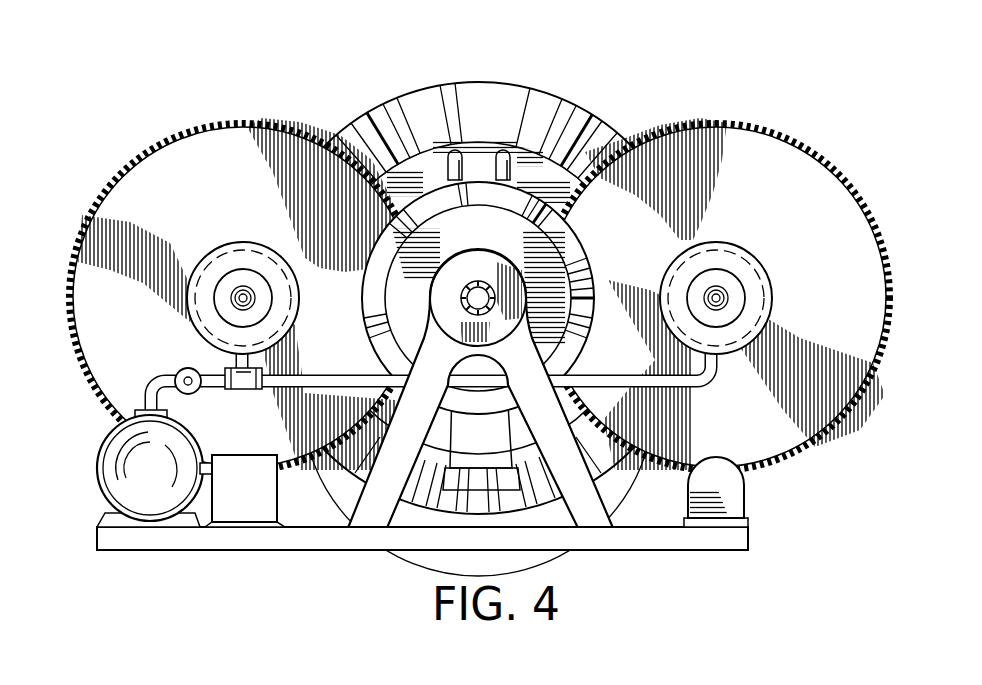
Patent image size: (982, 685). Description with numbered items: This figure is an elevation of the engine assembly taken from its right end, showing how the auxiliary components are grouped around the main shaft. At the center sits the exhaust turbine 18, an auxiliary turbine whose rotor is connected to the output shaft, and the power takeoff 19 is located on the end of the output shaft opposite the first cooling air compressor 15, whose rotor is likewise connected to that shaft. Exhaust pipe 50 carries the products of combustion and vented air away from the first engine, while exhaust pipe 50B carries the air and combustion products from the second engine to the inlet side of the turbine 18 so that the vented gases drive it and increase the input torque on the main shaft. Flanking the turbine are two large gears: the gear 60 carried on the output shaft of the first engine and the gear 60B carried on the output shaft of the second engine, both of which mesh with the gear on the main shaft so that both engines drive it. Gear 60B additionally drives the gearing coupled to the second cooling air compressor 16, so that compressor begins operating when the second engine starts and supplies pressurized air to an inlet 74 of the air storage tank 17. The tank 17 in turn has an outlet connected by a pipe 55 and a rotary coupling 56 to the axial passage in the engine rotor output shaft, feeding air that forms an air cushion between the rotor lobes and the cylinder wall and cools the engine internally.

The first cooling air compressor 15 is at (470, 150).
The second cooling air compressor 16 is at (272, 488).
The air storage tank 17 is at (103, 444).
The exhaust turbine 18 is at (495, 237).
The power takeoff 19 is at (467, 292).
The exhaust pipe 50 is at (510, 165).
The exhaust pipe 50B is at (444, 170).
The pipe 55 is at (214, 378).
The rotary coupling 56 is at (712, 292).
The gear 60 is at (800, 160).
The gear 60B is at (166, 163).
The inlet 74 is at (207, 462).